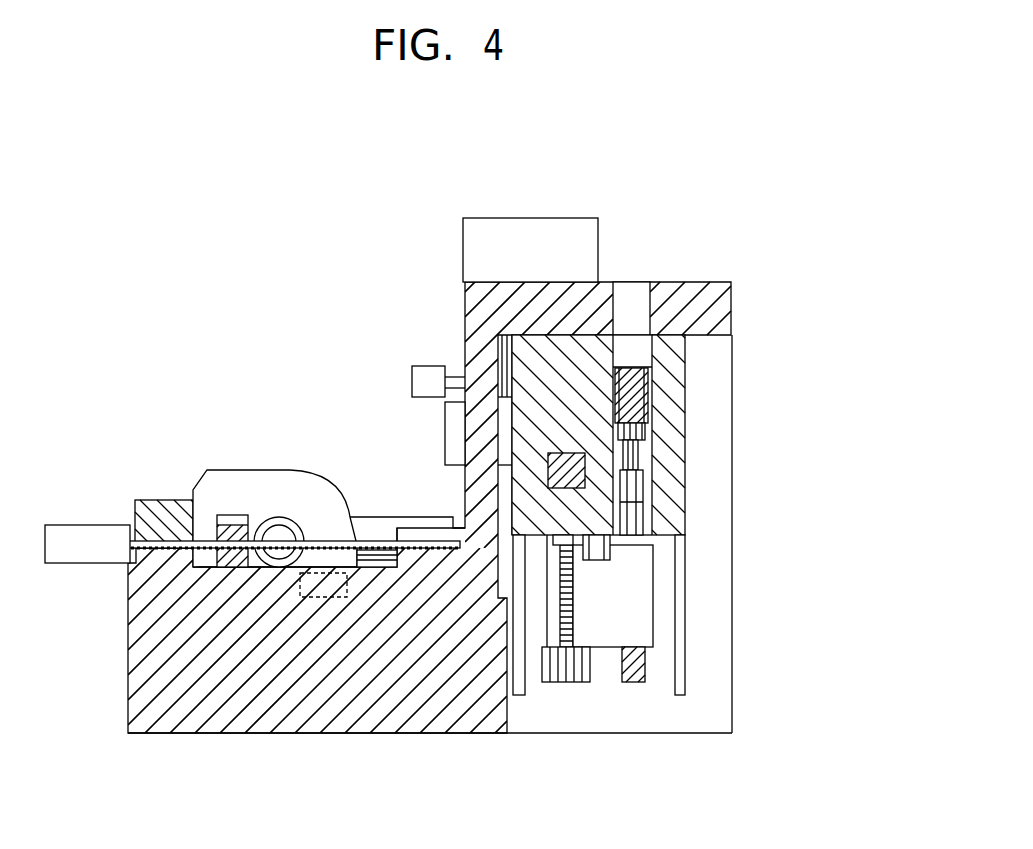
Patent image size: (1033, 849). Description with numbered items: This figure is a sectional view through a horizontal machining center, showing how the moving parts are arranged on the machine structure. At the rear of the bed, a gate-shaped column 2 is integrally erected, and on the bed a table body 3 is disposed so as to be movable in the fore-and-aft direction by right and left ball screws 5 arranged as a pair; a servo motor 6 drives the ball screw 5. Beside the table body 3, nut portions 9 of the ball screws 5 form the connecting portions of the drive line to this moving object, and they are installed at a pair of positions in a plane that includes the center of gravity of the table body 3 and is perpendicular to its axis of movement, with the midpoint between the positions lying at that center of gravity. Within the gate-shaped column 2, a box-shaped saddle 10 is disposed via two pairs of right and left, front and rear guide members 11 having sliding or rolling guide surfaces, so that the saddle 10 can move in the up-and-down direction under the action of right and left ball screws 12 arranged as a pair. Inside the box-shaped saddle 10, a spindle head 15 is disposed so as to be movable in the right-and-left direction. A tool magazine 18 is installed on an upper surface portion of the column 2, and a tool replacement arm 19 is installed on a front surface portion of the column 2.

The gate-shaped column 2 is at (705, 308).
The table body 3 is at (260, 493).
The ball screw 5 is at (167, 552).
The servo motor 6 is at (83, 548).
The nut portion 9 is at (223, 522).
The box-shaped saddle 10 is at (665, 467).
The guide member 11 is at (522, 695).
The ball screw 12 is at (583, 598).
The spindle head 15 is at (452, 432).
The tool magazine 18 is at (522, 238).
The tool replacement arm 19 is at (427, 380).